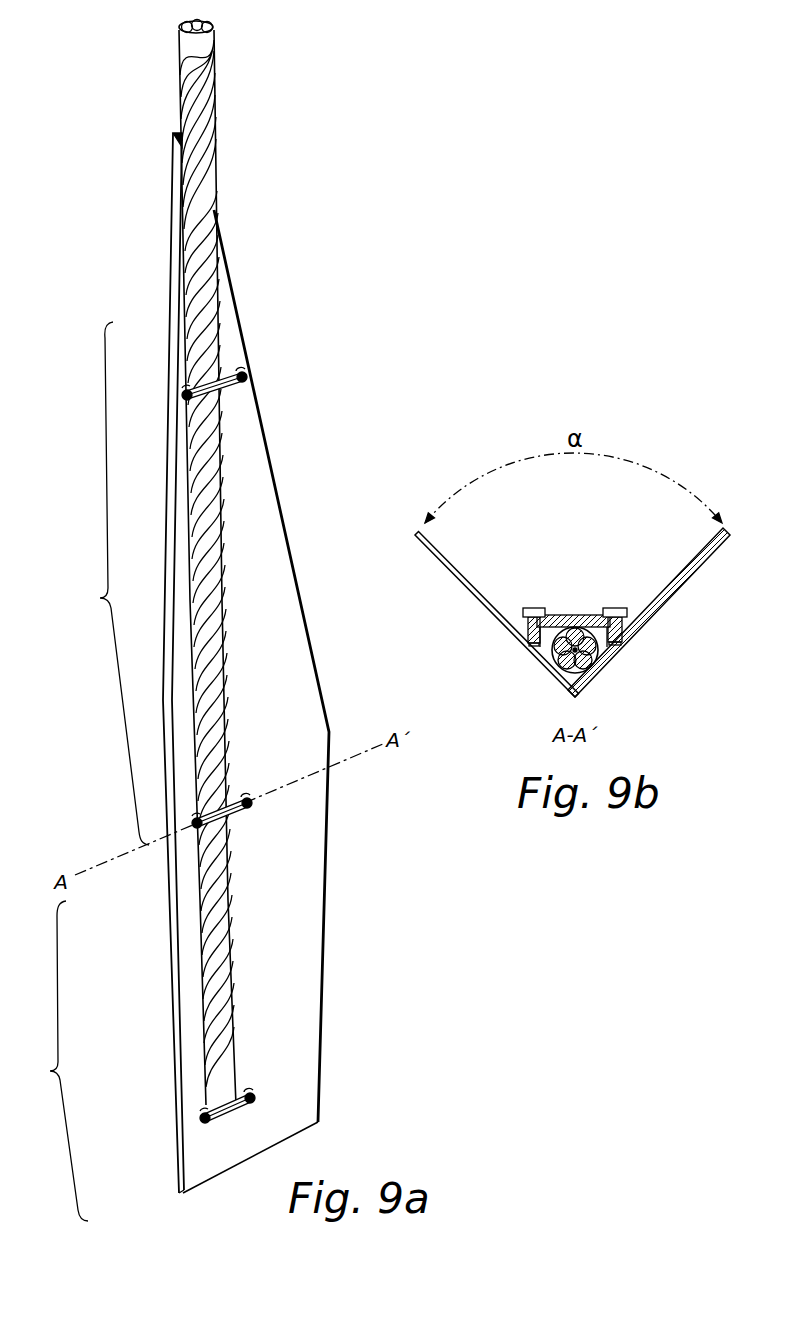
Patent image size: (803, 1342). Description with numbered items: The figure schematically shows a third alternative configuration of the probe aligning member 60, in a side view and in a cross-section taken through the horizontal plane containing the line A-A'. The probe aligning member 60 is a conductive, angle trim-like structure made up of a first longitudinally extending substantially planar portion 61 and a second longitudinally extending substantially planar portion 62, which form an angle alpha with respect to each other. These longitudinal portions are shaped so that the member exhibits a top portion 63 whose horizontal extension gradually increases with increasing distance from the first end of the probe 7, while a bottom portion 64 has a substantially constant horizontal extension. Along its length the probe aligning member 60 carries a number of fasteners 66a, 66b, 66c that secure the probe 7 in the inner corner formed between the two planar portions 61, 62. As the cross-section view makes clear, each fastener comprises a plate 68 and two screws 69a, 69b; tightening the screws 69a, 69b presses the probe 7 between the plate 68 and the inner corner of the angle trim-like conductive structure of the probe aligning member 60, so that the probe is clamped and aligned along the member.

In FIG. 9a, the probe 7 is at (203, 132).
In FIG. 9a, the probe aligning member 60 is at (357, 491).
In FIG. 9a, the first longitudinally extending substantially planar portion 61 is at (185, 932).
In FIG. 9b, the first longitudinally extending substantially planar portion 61 is at (682, 590).
In FIG. 9a, the second longitudinally extending substantially planar portion 62 is at (287, 917).
In FIG. 9b, the second longitudinally extending substantially planar portion 62 is at (470, 583).
In FIG. 9a, the top portion 63 is at (113, 583).
In FIG. 9a, the bottom portion 64 is at (56, 1061).
In FIG. 9a, the fastener 66a is at (240, 345).
In FIG. 9a, the fastener 66b is at (283, 802).
In FIG. 9b, the fastener 66b is at (597, 585).
In FIG. 9a, the fastener 66c is at (276, 1092).
In FIG. 9b, the plate 68 is at (568, 613).
In FIG. 9b, the screw 69a is at (532, 607).
In FIG. 9b, the screw 69b is at (617, 607).